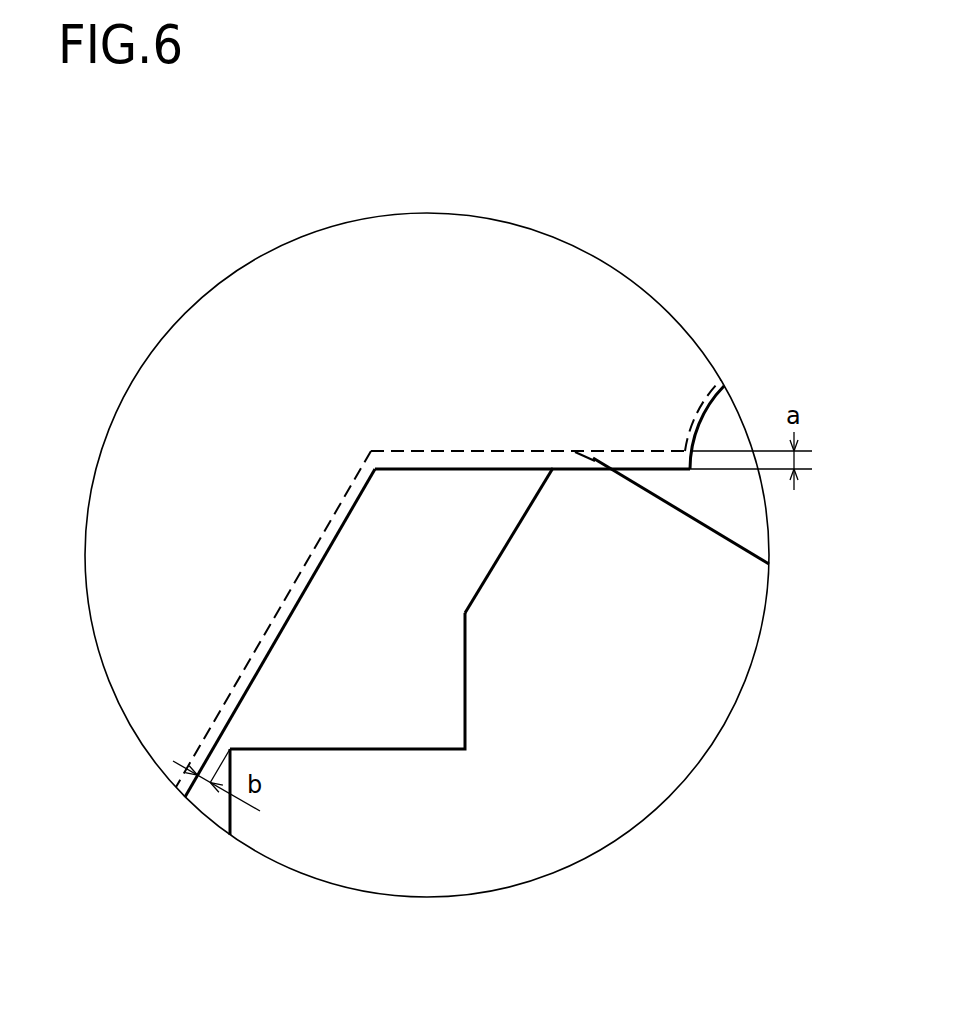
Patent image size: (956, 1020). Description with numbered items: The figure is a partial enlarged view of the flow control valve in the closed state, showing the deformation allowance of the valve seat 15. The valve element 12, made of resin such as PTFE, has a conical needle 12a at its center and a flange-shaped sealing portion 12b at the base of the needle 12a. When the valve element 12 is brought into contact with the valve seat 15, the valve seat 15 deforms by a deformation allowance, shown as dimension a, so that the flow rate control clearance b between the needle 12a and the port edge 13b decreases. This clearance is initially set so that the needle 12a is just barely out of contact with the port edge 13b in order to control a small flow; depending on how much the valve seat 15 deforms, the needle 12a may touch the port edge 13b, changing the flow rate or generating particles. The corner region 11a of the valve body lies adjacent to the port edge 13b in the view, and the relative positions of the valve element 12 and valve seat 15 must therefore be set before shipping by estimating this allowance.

The valve element 12 is at (352, 267).
The needle 12a is at (276, 580).
The sealing portion 12b is at (567, 455).
The port edge 13b is at (227, 742).
The inner corner portion 11a is at (457, 731).
The valve seat 15 is at (538, 523).